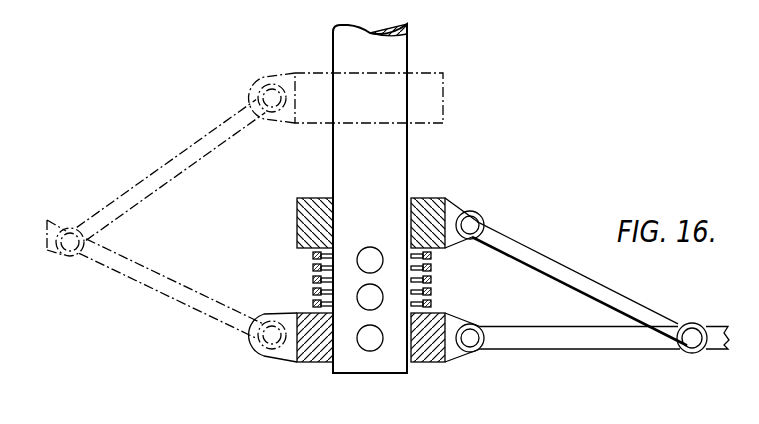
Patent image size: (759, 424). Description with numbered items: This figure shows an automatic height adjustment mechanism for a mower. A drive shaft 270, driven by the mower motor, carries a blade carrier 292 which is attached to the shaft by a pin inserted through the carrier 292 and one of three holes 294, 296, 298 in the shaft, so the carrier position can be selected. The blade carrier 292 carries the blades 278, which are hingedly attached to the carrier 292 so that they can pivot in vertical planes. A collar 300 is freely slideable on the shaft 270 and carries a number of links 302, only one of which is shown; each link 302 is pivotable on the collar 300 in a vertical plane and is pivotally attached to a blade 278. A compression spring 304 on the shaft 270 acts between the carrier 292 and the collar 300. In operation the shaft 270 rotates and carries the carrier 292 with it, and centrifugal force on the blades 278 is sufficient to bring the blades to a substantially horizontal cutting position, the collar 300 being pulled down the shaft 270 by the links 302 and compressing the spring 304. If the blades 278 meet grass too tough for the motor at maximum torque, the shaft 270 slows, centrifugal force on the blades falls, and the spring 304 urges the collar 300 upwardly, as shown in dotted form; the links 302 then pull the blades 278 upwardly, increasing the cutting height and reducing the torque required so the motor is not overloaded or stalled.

The drive shaft 270 is at (400, 61).
The collar 300 is at (325, 118).
The compression spring 304 is at (428, 268).
The hole 298 is at (375, 250).
The hole 296 is at (366, 297).
The hole 294 is at (367, 347).
The blade carrier 292 is at (448, 361).
The link 302 is at (540, 258).
The blades 278 is at (616, 340).